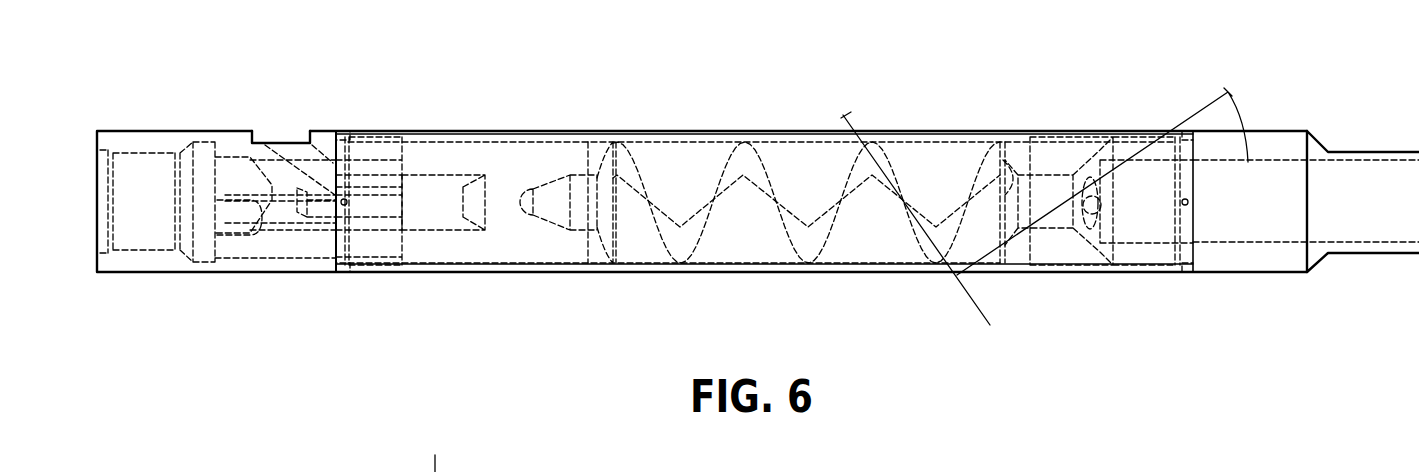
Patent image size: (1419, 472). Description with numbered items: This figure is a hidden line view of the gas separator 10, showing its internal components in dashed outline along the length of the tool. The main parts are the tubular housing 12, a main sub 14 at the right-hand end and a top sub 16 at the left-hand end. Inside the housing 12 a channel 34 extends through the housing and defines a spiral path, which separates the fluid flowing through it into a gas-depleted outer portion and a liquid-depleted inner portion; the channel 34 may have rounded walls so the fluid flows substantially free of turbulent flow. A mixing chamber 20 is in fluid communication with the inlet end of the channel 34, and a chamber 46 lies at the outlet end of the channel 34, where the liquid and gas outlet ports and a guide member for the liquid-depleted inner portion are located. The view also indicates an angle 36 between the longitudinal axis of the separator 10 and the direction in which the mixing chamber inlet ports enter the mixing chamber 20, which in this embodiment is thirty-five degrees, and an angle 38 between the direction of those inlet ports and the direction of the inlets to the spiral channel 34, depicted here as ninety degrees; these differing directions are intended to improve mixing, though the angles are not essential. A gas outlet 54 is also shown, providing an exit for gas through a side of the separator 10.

The separator 10 is at (533, 69).
The housing 12 is at (768, 273).
The main sub 14 is at (1252, 273).
The top sub 16 is at (237, 273).
The mixing chamber 20 is at (1055, 250).
The channel 34 is at (826, 183).
The angle 36 is at (1189, 202).
The angle 38 is at (848, 115).
The chamber 46 is at (528, 250).
The gas outlet 54 is at (283, 143).